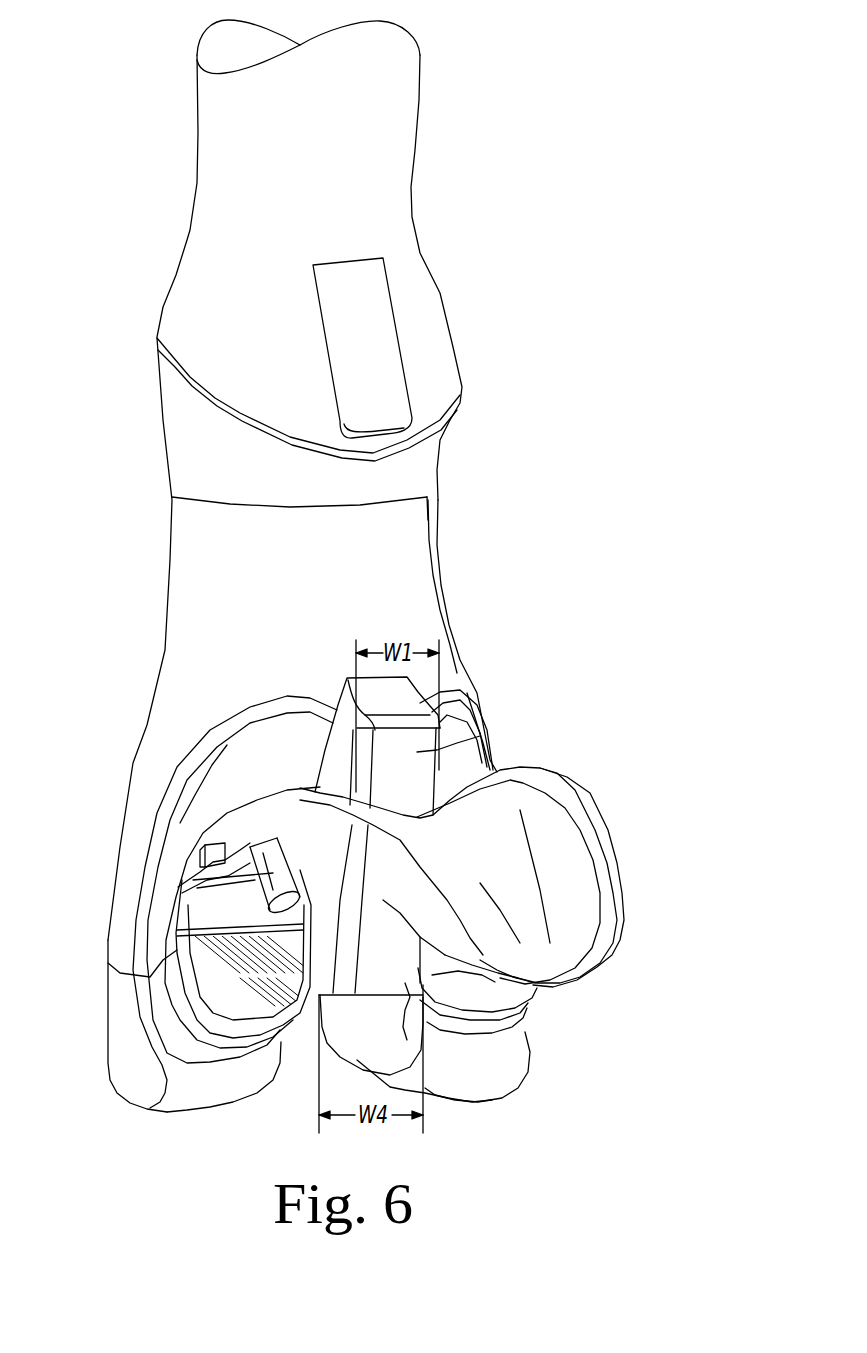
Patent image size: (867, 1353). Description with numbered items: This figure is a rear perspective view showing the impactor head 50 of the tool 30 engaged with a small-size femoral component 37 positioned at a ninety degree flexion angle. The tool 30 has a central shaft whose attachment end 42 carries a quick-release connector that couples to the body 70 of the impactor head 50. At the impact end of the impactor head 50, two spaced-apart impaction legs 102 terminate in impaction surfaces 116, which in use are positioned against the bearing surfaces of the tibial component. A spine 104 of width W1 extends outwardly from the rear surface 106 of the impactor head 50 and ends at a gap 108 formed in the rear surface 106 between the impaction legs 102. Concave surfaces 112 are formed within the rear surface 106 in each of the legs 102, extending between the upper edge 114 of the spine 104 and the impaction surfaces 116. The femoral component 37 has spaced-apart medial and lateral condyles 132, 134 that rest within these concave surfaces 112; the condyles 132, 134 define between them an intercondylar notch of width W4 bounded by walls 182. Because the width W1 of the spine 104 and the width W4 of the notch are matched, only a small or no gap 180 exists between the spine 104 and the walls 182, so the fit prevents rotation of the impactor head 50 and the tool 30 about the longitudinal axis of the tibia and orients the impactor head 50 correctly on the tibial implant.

The tool 30 is at (448, 209).
The attachment end 42 is at (443, 458).
The impactor head 50 is at (482, 529).
The body 70 is at (190, 548).
The rear surface 106 is at (410, 628).
The spine 104 is at (468, 720).
The upper edge 114 is at (388, 702).
The concave surfaces 112 is at (462, 750).
The medial condyle 132 is at (467, 793).
The lateral condyle 134 is at (168, 968).
The gap 108 is at (291, 1073).
The femoral component 37 is at (652, 948).
The gap 180 is at (330, 960).
The walls 182 is at (310, 954).
The impaction legs 102 is at (120, 1069).
The impaction surfaces 116 is at (193, 1113).